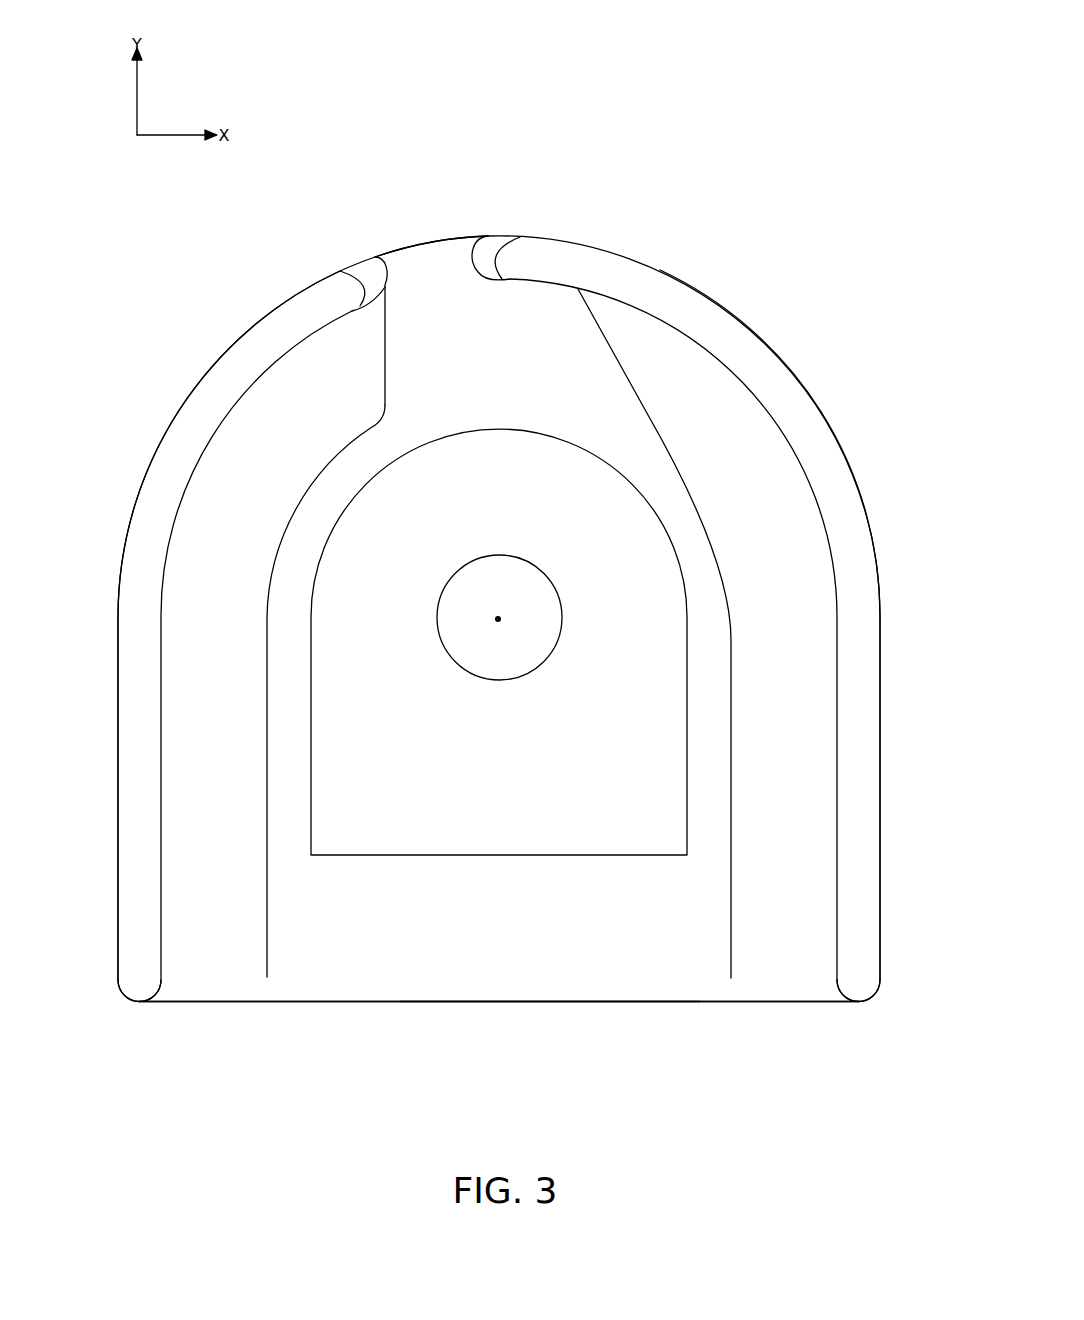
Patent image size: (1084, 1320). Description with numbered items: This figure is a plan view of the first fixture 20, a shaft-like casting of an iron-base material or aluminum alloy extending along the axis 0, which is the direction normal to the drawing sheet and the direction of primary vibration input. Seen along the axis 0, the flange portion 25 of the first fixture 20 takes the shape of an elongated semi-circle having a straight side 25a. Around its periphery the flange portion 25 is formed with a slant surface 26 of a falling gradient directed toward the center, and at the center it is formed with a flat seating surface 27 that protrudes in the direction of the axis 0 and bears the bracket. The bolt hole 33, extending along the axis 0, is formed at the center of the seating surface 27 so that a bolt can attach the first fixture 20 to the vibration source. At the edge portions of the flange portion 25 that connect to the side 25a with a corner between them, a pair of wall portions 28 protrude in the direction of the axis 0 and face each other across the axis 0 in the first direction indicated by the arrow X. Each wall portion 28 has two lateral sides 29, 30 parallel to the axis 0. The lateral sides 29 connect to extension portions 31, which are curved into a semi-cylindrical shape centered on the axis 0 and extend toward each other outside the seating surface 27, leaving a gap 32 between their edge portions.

The first fixture 20 is at (806, 126).
The flange portion 25 is at (460, 983).
The straight side 25a is at (570, 1003).
The slant surface 26 is at (787, 975).
The seating surface 27 is at (523, 445).
The wall portions 28 is at (140, 773).
The lateral sides 29 is at (140, 553).
The lateral sides 30 is at (138, 977).
The extension portions 31 is at (285, 330).
The gap 32 is at (430, 267).
The bolt hole 33 is at (548, 656).
The axis 0 is at (498, 619).